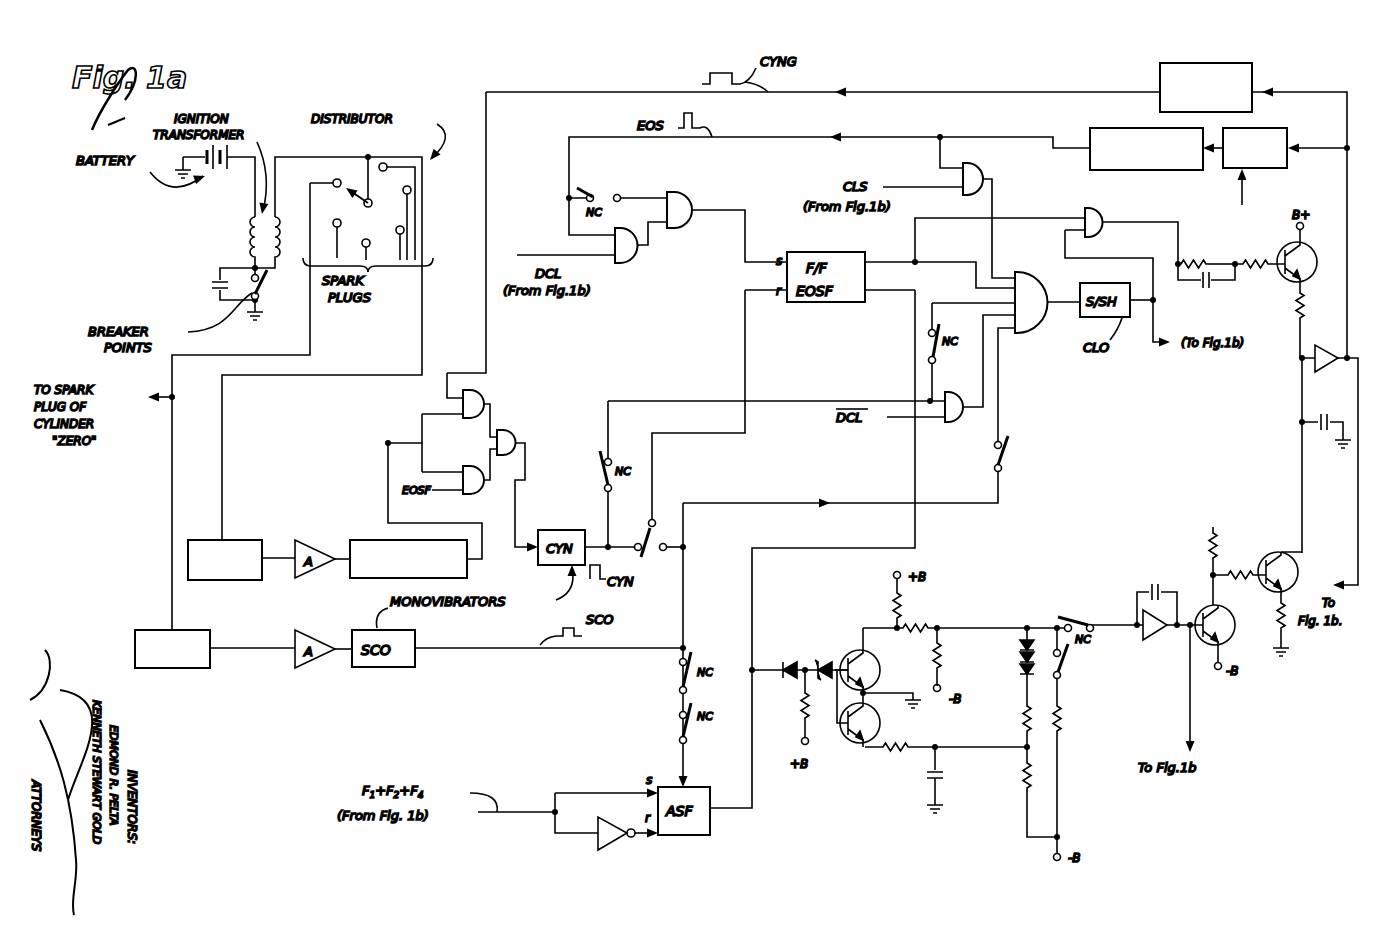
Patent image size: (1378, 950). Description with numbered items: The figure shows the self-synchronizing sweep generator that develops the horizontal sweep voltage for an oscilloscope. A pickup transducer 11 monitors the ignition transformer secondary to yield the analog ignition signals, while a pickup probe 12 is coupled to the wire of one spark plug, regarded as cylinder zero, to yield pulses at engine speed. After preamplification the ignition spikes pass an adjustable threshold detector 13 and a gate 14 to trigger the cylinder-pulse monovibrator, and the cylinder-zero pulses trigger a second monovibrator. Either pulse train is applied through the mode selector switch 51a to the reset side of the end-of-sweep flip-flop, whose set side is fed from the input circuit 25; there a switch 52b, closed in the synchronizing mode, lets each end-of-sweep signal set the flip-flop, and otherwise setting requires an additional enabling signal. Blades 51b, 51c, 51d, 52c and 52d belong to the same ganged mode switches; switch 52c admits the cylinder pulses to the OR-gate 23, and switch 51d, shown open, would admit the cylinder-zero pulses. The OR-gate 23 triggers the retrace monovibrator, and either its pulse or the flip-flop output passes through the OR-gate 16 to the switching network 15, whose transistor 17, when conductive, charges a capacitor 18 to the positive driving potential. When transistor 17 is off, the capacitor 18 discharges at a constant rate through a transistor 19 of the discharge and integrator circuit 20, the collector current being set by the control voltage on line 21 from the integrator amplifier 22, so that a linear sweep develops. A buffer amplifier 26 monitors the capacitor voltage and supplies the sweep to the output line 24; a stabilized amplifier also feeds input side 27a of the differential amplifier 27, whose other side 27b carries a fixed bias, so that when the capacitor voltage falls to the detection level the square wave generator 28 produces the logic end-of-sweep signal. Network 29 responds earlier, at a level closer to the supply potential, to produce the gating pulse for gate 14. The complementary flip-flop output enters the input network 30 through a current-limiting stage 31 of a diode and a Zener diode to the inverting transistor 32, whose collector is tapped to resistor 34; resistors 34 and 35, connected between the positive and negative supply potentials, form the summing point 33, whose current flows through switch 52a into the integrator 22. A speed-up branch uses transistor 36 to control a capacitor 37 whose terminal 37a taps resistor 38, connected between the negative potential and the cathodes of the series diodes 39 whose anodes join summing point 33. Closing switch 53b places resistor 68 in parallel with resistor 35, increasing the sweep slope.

The pickup transducer 11 is at (285, 520).
The pickup probe 12 is at (210, 636).
The threshold detector 13 is at (371, 540).
The gate 14 is at (461, 457).
The switching network 15 is at (1276, 244).
The OR-gate 16 is at (1093, 209).
The transistor 17 is at (1283, 278).
The capacitor 18 is at (1332, 416).
The transistor 19 is at (1282, 554).
The discharge and integrator circuit 20 is at (1236, 624).
The line 21 is at (1192, 714).
The integrator amplifier 22 is at (1152, 641).
The OR-gate 23 is at (1022, 273).
The output line 24 is at (1358, 516).
The input circuit 25 is at (699, 261).
The buffer amplifier 26 is at (1328, 349).
The differential amplifier 27 is at (1262, 169).
The input side 27a is at (1322, 146).
The input side 27b is at (1241, 200).
The square wave generator 28 is at (1133, 128).
The network 29 is at (1253, 70).
The input network 30 is at (976, 680).
The current limiting input stage 31 is at (788, 712).
The inverting transistor 32 is at (880, 667).
The summing point 33 is at (1028, 626).
The resistor 34 is at (901, 596).
The resistor 35 is at (943, 660).
The transistor 36 is at (851, 746).
The capacitor 37 is at (925, 776).
The capacitor terminal 37a is at (934, 746).
The resistor 38 is at (1021, 719).
The series of diodes 39 is at (1019, 656).
The mode selector switch 51a is at (657, 528).
The mode selector switch blade 51b is at (598, 470).
The mode selector switch blade 51c is at (680, 674).
The mode selector switch 51d is at (1004, 447).
The mode switch 52a is at (1086, 619).
The constant sweep mode switch 52b is at (606, 194).
The mode switch 52c is at (926, 336).
The constant sweep mode switch blade 52d is at (680, 722).
The mode switch 53b is at (1064, 655).
The resistor 68 is at (1064, 718).